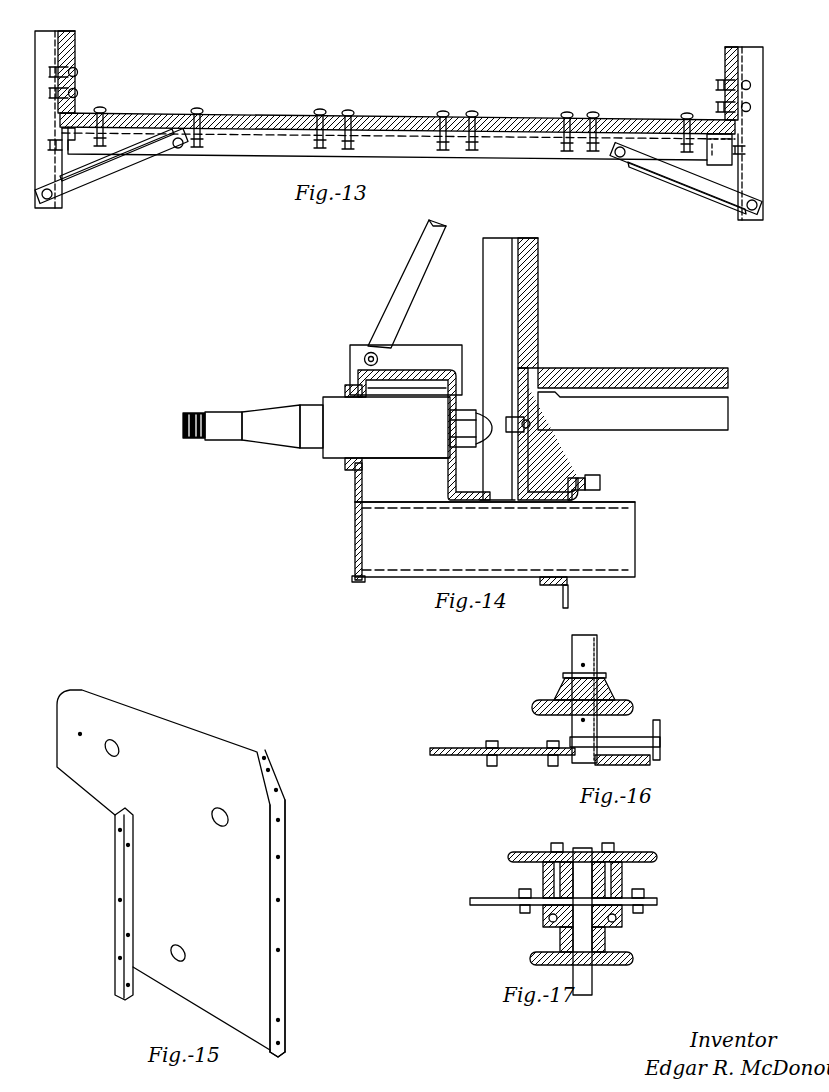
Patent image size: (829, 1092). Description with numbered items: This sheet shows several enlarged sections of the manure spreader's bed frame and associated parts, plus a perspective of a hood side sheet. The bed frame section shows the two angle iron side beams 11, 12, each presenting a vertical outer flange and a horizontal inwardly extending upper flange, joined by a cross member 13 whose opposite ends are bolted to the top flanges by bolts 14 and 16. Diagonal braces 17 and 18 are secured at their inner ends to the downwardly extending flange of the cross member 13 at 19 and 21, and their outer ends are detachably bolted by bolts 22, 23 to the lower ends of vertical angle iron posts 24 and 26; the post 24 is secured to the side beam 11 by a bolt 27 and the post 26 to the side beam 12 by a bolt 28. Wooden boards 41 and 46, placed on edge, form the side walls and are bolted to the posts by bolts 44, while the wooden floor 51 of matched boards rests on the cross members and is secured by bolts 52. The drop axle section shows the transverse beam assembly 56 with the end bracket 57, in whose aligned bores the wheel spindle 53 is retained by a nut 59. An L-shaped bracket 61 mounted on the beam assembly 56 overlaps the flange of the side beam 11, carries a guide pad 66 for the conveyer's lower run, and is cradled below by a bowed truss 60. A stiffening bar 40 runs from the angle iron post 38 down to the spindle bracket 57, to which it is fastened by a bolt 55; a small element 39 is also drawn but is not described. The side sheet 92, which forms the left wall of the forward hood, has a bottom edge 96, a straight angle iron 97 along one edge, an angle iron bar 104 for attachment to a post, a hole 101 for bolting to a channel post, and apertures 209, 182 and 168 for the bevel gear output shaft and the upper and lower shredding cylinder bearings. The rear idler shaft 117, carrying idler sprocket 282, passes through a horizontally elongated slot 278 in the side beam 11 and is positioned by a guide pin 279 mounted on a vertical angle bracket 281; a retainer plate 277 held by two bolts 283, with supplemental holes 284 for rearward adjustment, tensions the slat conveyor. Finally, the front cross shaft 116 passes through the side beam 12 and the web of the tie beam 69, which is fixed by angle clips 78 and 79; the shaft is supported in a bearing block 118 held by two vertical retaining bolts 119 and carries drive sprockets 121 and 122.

In FIG. 13, the vertical angle iron post 26 is at (45, 34).
In FIG. 13, the wooden board 46 is at (70, 68).
In FIG. 13, the bolt 28 is at (52, 140).
In FIG. 13, the bolt 16 is at (72, 134).
In FIG. 13, the wooden floor 51 is at (421, 113).
In FIG. 14, the wooden floor 51 is at (707, 368).
In FIG. 13, the bolts 52 is at (348, 110).
In FIG. 13, the cross member 13 is at (405, 157).
In FIG. 13, the diagonal brace 18 is at (121, 178).
In FIG. 13, the side beam 12 is at (80, 188).
In FIG. 17, the side beam 12 is at (480, 898).
In FIG. 13, the connection of brace to cross member 21 is at (179, 150).
In FIG. 13, the bolt 23 is at (48, 209).
In FIG. 13, the vertical angle iron post 24 is at (758, 48).
In FIG. 14, the vertical angle iron post 24 is at (505, 504).
In FIG. 13, the wooden board 41 is at (725, 70).
In FIG. 14, the wooden board 41 is at (538, 326).
In FIG. 13, the bolts 44 is at (717, 105).
In FIG. 13, the bolt 27 is at (745, 150).
In FIG. 13, the bolt 14 is at (718, 153).
In FIG. 13, the connection of brace to cross member 19 is at (620, 160).
In FIG. 13, the diagonal brace 17 is at (672, 183).
In FIG. 13, the side beam 11 is at (712, 198).
In FIG. 14, the side beam 11 is at (528, 398).
In FIG. 16, the side beam 11 is at (450, 748).
In FIG. 13, the bolt 22 is at (752, 212).
In FIG. 14, the angle iron post 38 is at (483, 311).
In FIG. 14, the L-shaped bracket 61 is at (530, 457).
In FIG. 14, the stiffening bar 40 is at (390, 304).
In FIG. 14, the bolt 55 is at (379, 360).
In FIG. 14, the end bracket 57 is at (355, 491).
In FIG. 14, the wheel spindle 53 is at (256, 441).
In FIG. 14, the nut 59 is at (480, 408).
In FIG. 14, the bolt 39 is at (512, 433).
In FIG. 14, the guide pad 66 is at (591, 474).
In FIG. 14, the transverse beam assembly 56 is at (636, 551).
In FIG. 14, the bowed truss 60 is at (569, 600).
In FIG. 15, the hole 101 is at (80, 736).
In FIG. 15, the angle iron 97 is at (115, 953).
In FIG. 15, the angle iron bar 104 is at (279, 953).
In FIG. 15, the side sheet 92 is at (208, 1010).
In FIG. 15, the bottom edge 96 is at (234, 1028).
In FIG. 15, the aperture 209 is at (119, 751).
In FIG. 15, the hole 182 is at (226, 828).
In FIG. 15, the aperture 168 is at (185, 955).
In FIG. 16, the rear cross shaft 117 is at (598, 654).
In FIG. 16, the idler sprocket 282 is at (633, 707).
In FIG. 16, the supplemental holes 284 is at (481, 767).
In FIG. 16, the bolts 283 is at (552, 745).
In FIG. 16, the retainer plate 277 is at (520, 758).
In FIG. 16, the guide pin 279 is at (640, 738).
In FIG. 16, the vertical angle bracket 281 is at (661, 733).
In FIG. 16, the horizontally elongated slot 278 is at (610, 766).
In FIG. 17, the front cross shaft 116 is at (593, 992).
In FIG. 17, the drive sprocket 121 is at (657, 857).
In FIG. 17, the tie beam 69 is at (623, 879).
In FIG. 17, the angle clip 78 is at (524, 890).
In FIG. 17, the angle clip 79 is at (650, 900).
In FIG. 17, the bearing block 118 is at (543, 916).
In FIG. 17, the retaining bolts 119 is at (550, 924).
In FIG. 17, the drive sprocket 122 is at (633, 959).